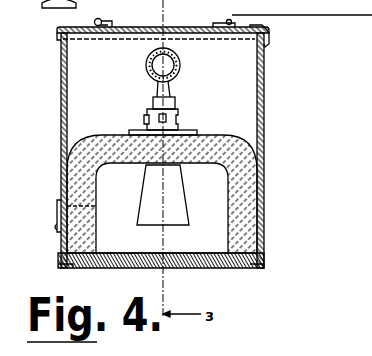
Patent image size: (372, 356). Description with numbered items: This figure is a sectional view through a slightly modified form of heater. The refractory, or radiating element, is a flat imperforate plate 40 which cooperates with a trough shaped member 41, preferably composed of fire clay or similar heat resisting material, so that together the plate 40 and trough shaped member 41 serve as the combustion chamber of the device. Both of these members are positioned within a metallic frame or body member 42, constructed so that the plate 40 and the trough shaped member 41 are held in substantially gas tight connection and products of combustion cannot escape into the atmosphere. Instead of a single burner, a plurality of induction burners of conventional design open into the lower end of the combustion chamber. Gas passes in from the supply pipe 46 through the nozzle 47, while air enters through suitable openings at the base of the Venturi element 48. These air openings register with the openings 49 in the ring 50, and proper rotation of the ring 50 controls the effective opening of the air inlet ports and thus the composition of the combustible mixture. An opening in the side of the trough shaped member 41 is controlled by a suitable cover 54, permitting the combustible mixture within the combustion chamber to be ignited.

The flat imperforate plate 40 is at (208, 258).
The trough shaped member 41 is at (243, 214).
The metallic frame or body member 42 is at (264, 93).
The supply pipe 46 is at (180, 61).
The nozzle 47 is at (166, 94).
The Venturi element 48 is at (186, 197).
The openings 49 is at (146, 118).
The ring 50 is at (178, 112).
The cover 54 is at (58, 212).